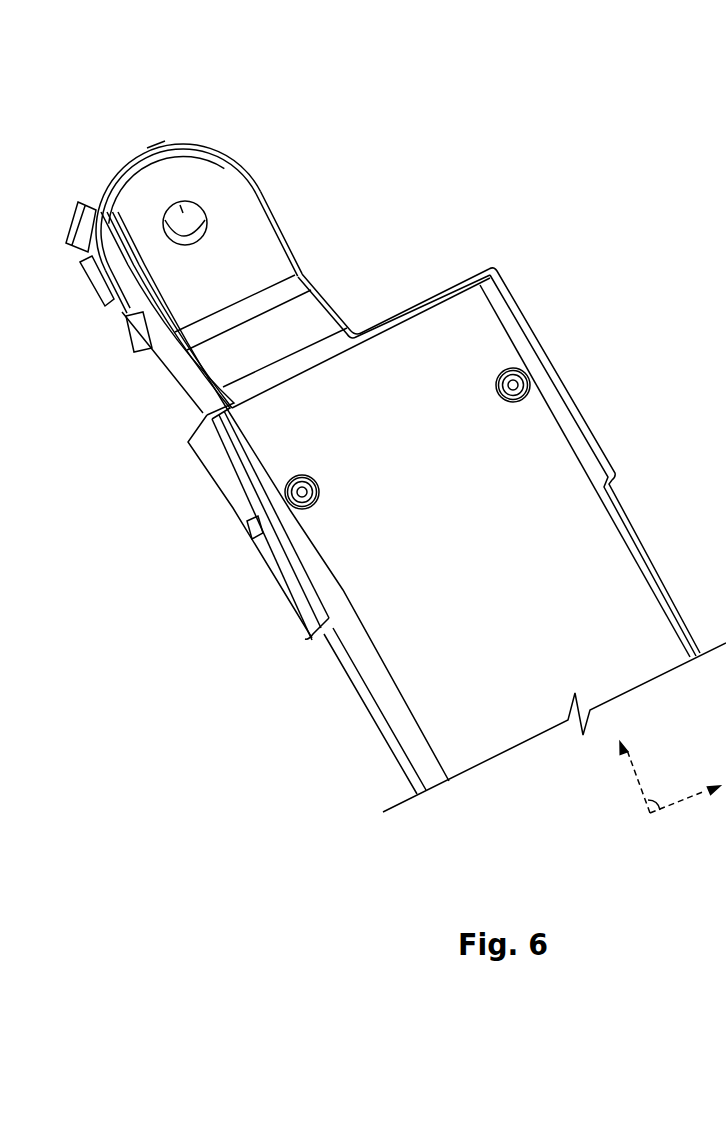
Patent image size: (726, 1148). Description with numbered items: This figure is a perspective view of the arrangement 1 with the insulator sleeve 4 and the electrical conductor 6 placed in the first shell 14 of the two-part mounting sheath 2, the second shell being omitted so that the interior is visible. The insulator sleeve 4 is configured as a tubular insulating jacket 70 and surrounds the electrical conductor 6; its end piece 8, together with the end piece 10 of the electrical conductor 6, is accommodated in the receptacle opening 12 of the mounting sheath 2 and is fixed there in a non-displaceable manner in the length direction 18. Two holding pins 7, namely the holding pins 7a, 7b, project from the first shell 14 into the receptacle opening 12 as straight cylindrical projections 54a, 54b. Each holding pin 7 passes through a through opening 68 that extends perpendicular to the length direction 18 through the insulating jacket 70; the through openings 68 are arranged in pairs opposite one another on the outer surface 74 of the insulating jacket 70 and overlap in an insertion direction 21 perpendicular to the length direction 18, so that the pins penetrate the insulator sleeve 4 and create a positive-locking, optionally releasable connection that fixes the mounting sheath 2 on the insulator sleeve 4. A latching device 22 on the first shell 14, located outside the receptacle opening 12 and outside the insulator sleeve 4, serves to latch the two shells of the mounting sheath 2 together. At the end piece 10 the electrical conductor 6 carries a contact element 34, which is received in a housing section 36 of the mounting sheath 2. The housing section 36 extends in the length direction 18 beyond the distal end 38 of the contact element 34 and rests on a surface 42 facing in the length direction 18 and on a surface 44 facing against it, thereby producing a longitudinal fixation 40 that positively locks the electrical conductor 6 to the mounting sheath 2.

The arrangement 1 is at (535, 86).
The mounting sheath 2 is at (243, 531).
The first shell 14 is at (243, 531).
The insulator sleeve 4 is at (477, 545).
The tubular insulating jacket 70 is at (603, 567).
The electrical conductor 6 is at (332, 296).
The contact element 34 is at (313, 320).
The holding pin 7 is at (372, 415).
The holding pin 7a is at (185, 518).
The holding pin 7b is at (596, 336).
The cylindrical projection 54a is at (287, 493).
The cylindrical projection 54b is at (513, 365).
The end piece 8 is at (170, 448).
The end piece 10 is at (160, 423).
The receptacle opening 12 is at (332, 672).
The length direction 18 is at (633, 778).
The insertion direction 21 is at (668, 807).
The latching device 22 is at (250, 530).
The housing section 36 is at (126, 320).
The distal end 38 is at (225, 257).
The longitudinal fixation 40 is at (133, 157).
The surface 42 is at (157, 148).
The surface 44 is at (200, 207).
The through opening 68 is at (302, 528).
The outer surface 74 is at (565, 470).